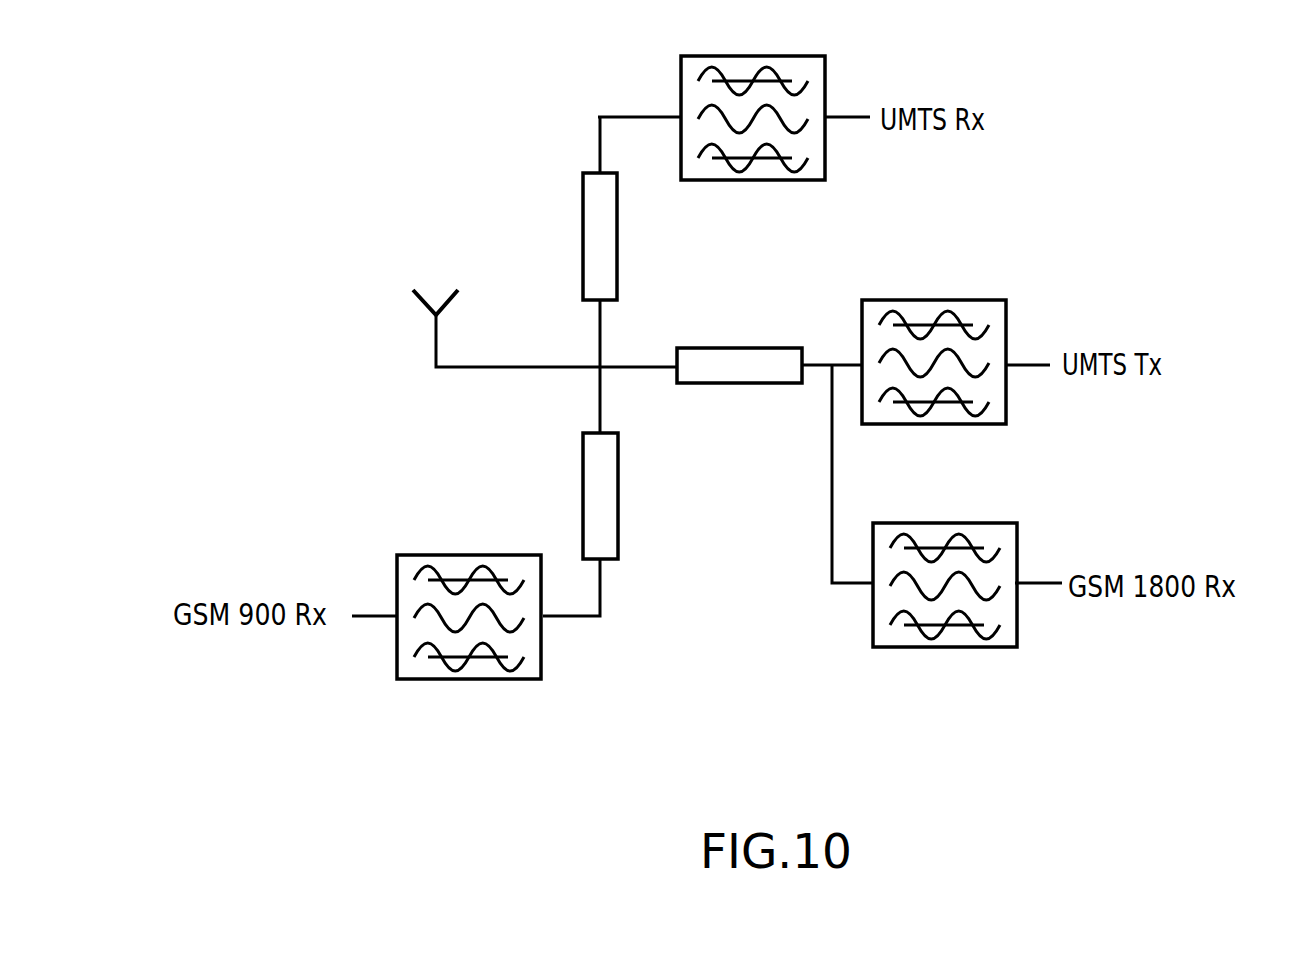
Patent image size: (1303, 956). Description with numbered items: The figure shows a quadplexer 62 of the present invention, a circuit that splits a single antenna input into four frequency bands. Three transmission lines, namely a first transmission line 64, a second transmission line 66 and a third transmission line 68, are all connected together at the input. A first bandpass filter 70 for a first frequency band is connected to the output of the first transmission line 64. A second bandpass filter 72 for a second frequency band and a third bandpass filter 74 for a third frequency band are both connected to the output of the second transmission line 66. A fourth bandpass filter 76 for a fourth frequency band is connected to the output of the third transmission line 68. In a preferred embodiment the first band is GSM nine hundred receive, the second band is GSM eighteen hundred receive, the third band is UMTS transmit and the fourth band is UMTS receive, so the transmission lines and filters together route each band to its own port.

The quadplexer 62 is at (403, 57).
The first transmission line 64 is at (618, 503).
The second transmission line 66 is at (743, 383).
The third transmission line 68 is at (618, 240).
The first bandpass filter 70 is at (468, 555).
The second bandpass filter 72 is at (947, 648).
The third bandpass filter 74 is at (932, 300).
The fourth bandpass filter 76 is at (762, 180).